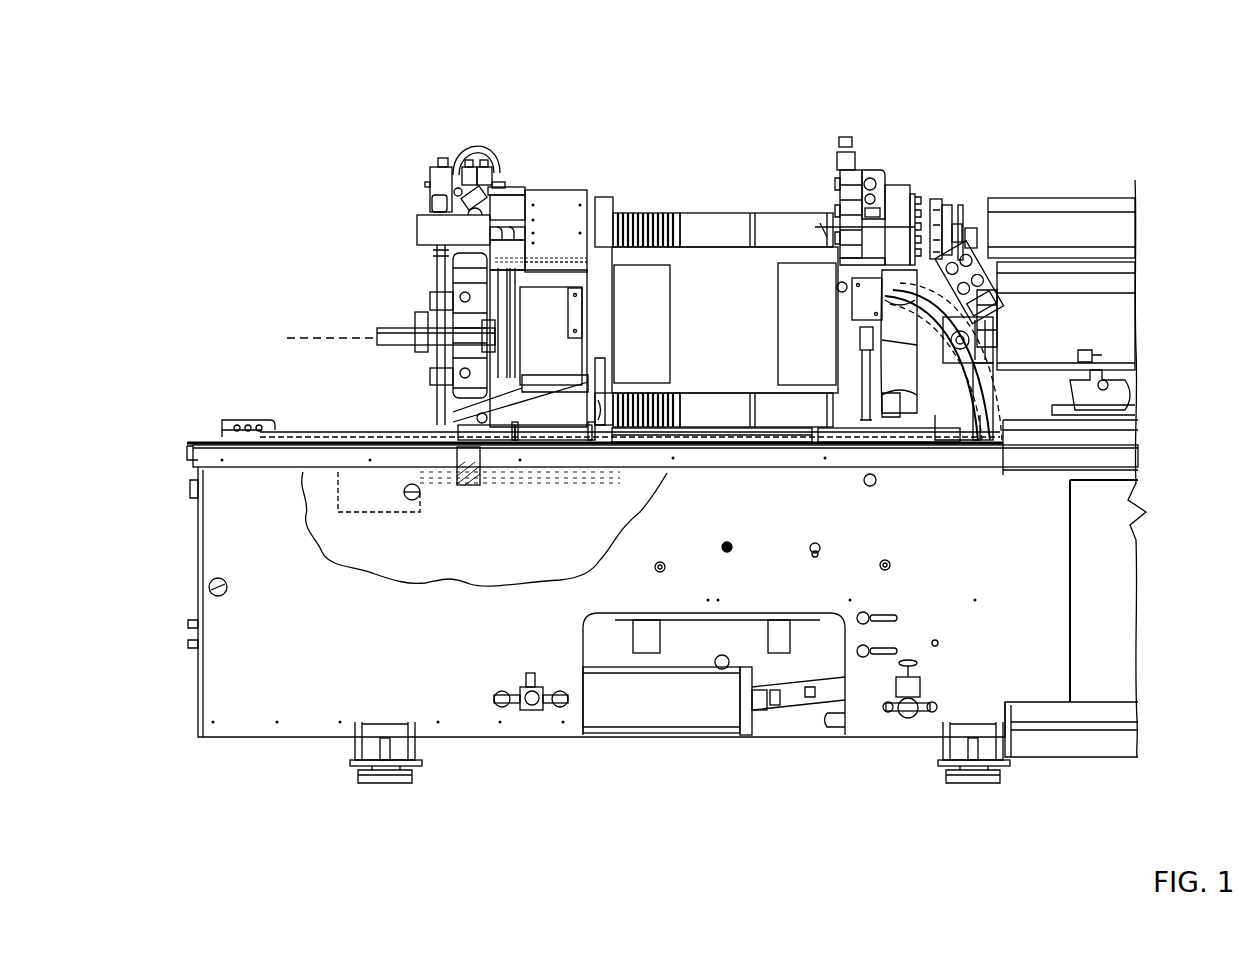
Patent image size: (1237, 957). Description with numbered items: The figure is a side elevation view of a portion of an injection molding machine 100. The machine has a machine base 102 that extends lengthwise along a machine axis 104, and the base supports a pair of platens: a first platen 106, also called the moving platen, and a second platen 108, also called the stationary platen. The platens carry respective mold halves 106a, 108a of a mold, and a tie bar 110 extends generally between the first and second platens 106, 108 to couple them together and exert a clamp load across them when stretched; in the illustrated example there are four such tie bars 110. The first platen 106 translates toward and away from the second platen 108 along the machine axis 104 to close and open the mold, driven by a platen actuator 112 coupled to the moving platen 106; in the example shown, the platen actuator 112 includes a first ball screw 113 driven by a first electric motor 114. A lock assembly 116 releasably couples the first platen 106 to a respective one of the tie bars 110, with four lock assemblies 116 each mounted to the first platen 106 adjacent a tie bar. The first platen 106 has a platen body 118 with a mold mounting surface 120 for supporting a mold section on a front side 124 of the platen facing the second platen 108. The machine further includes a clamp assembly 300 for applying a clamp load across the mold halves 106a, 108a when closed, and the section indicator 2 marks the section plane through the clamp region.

The injection molding machine 100 is at (1098, 108).
The machine base 102 is at (290, 683).
The machine axis 104 is at (300, 338).
The first platen 106 is at (553, 185).
The mold half 106a is at (630, 300).
The second platen 108 is at (894, 183).
The mold half 108a is at (803, 287).
The tie bar 110 is at (715, 237).
The platen actuator 112 is at (452, 535).
The first ball screw 113 is at (538, 477).
The first electric motor 114 is at (373, 505).
The lock assembly 116 is at (500, 168).
The platen body 118 is at (566, 218).
The mold mounting surface 120 is at (624, 214).
The front side 124 is at (603, 341).
The clamp assembly 300 is at (929, 186).
The section line 2- 2 is at (832, 207).